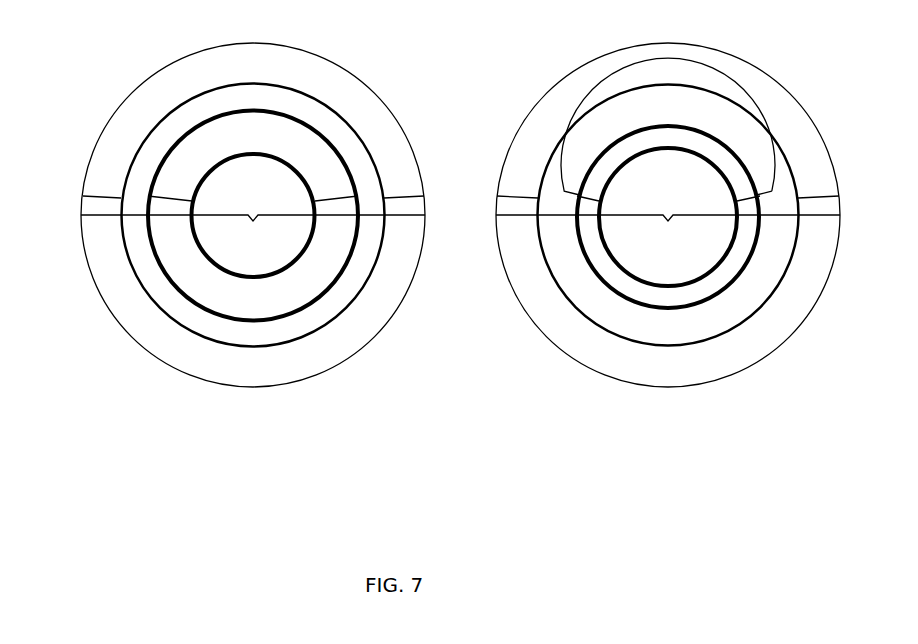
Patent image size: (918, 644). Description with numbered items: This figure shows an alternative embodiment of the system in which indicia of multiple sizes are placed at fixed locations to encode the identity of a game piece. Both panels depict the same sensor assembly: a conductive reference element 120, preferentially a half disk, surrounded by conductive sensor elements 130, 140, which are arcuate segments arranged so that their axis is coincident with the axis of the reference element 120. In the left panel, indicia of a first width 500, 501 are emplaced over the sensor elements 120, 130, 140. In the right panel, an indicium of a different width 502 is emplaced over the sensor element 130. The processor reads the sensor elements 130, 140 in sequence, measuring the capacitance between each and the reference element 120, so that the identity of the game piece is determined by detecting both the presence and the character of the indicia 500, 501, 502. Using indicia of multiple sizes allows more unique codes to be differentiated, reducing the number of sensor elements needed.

The conductive reference element 120 is at (263, 385).
The conductive sensor element 130 is at (303, 150).
The conductive sensor element 140 is at (138, 100).
The indicium of a first width 500 is at (158, 338).
The indicium of a first width 501 is at (172, 252).
The indicium of a different width 502 is at (580, 252).